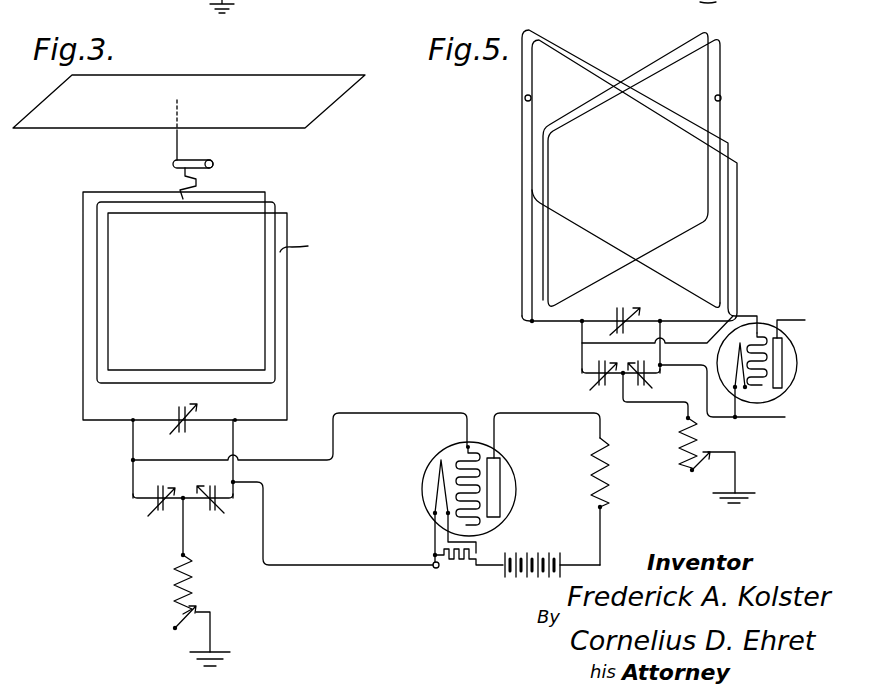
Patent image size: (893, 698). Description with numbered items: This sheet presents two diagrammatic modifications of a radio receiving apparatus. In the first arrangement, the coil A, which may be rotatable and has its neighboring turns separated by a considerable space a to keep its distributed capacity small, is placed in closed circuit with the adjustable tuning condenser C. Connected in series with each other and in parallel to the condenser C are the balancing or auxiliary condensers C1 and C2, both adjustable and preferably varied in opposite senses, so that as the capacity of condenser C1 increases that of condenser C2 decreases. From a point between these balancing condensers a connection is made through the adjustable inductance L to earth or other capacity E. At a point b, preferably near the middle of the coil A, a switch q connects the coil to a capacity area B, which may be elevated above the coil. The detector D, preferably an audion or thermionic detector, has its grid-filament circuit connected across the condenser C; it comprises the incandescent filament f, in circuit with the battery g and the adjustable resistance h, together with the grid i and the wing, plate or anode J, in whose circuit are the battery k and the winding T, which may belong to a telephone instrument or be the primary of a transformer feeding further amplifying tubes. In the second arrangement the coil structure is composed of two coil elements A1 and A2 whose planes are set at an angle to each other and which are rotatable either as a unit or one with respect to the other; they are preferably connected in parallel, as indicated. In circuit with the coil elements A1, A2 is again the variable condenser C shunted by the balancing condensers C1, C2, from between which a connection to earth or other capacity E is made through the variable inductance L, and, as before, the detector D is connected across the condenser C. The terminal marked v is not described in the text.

In FIG. 3, the capacity area B is at (303, 118).
In FIG. 3, the switch q is at (197, 158).
In FIG. 3, the point b is at (187, 200).
In FIG. 3, the coil A is at (287, 298).
In FIG. 3, the space a is at (301, 244).
In FIG. 5, the space a is at (721, 96).
In FIG. 3, the variable tuning condenser C is at (178, 413).
In FIG. 5, the variable tuning condenser C is at (613, 313).
In FIG. 3, the balancing or auxiliary condenser C1 is at (155, 512).
In FIG. 5, the balancing or auxiliary condenser C1 is at (604, 381).
In FIG. 3, the balancing or auxiliary condenser C2 is at (208, 505).
In FIG. 5, the balancing or auxiliary condenser C2 is at (647, 388).
In FIG. 3, the adjustable inductance L is at (195, 587).
In FIG. 5, the adjustable inductance L is at (694, 454).
In FIG. 3, the earth E is at (233, 651).
In FIG. 5, the earth E is at (712, 505).
In FIG. 3, the grid i is at (470, 445).
In FIG. 5, the grid i is at (763, 380).
In FIG. 3, the detector D is at (517, 468).
In FIG. 5, the detector D is at (774, 337).
In FIG. 3, the incandescent filament f is at (430, 503).
In FIG. 5, the incandescent filament f is at (745, 387).
In FIG. 3, the battery g is at (437, 568).
In FIG. 3, the adjustable resistance h is at (486, 552).
In FIG. 3, the battery k is at (549, 552).
In FIG. 5, the battery k is at (716, 7).
In FIG. 3, the winding T is at (609, 501).
In FIG. 5, the coil element A1 is at (722, 52).
In FIG. 5, the coil element A2 is at (738, 210).
In FIG. 5, the loop terminal v is at (524, 100).
In FIG. 5, the wing, plate or anode J is at (782, 343).